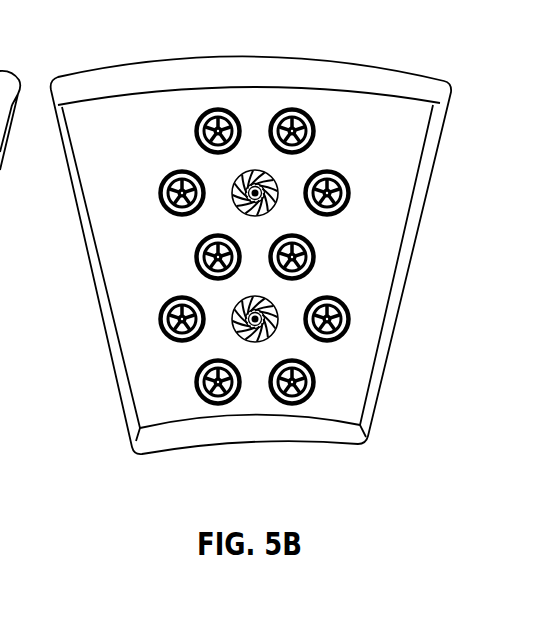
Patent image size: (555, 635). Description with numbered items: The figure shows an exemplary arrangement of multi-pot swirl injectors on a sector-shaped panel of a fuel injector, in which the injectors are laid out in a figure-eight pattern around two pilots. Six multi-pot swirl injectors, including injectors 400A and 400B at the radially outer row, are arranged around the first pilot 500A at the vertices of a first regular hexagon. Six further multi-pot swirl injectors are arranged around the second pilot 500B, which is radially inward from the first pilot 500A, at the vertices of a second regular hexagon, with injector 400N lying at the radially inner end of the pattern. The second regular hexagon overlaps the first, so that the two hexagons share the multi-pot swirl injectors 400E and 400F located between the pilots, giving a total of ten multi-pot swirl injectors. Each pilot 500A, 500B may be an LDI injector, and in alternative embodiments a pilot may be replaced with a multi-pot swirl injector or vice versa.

The multi-pot swirl injector 400A is at (215, 108).
The multi-pot swirl injector 400B is at (294, 108).
The multi-pot swirl injector 400E is at (195, 258).
The multi-pot swirl injector 400F is at (314, 262).
The multi-pot swirl injector 400N is at (279, 403).
The first pilot 500A is at (236, 200).
The second pilot 500B is at (229, 329).